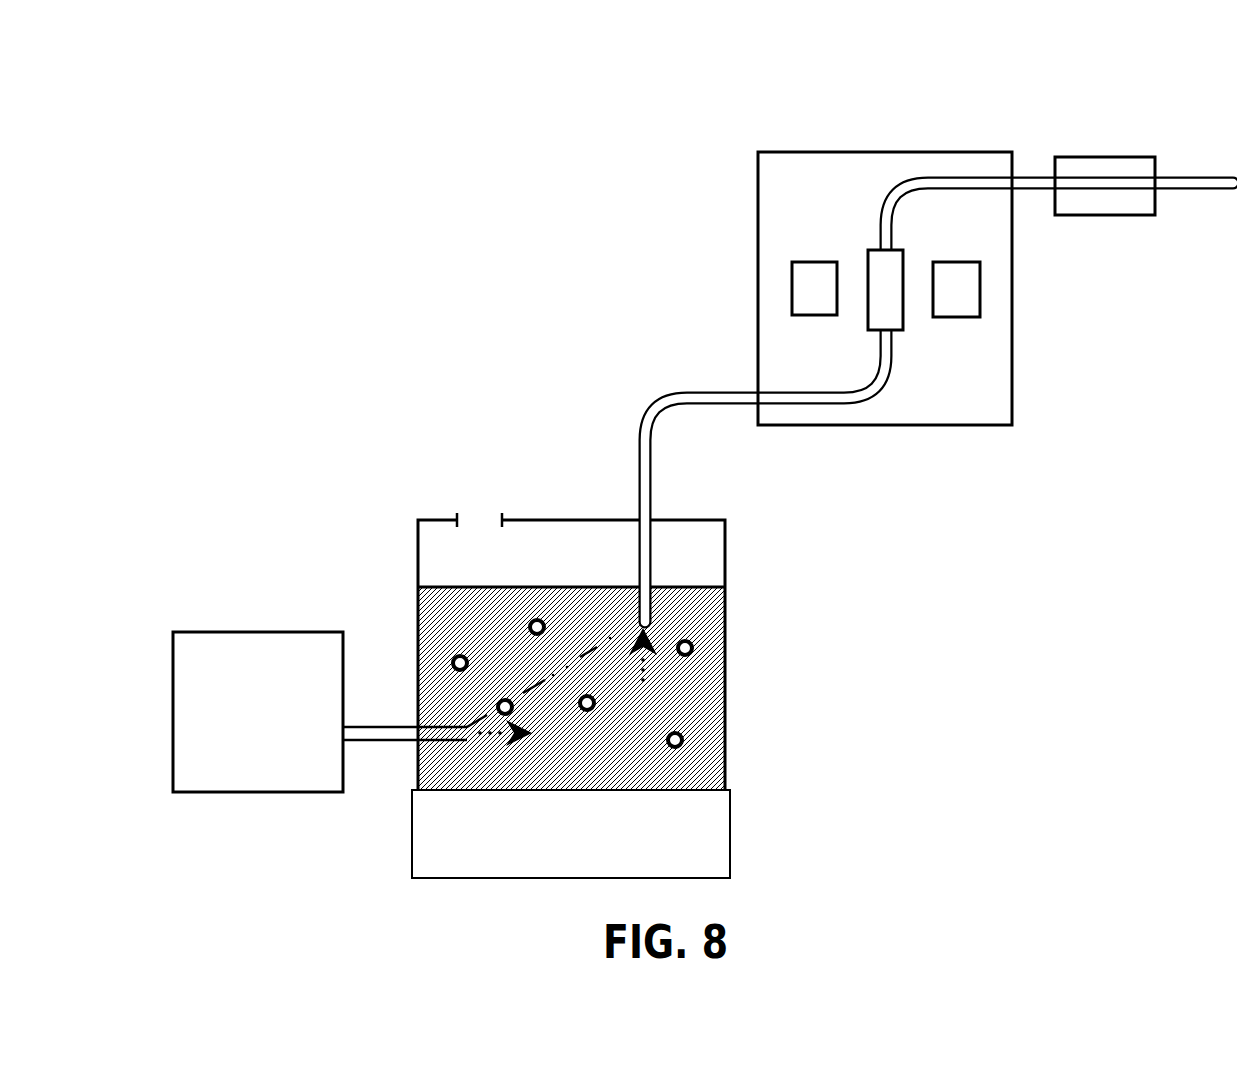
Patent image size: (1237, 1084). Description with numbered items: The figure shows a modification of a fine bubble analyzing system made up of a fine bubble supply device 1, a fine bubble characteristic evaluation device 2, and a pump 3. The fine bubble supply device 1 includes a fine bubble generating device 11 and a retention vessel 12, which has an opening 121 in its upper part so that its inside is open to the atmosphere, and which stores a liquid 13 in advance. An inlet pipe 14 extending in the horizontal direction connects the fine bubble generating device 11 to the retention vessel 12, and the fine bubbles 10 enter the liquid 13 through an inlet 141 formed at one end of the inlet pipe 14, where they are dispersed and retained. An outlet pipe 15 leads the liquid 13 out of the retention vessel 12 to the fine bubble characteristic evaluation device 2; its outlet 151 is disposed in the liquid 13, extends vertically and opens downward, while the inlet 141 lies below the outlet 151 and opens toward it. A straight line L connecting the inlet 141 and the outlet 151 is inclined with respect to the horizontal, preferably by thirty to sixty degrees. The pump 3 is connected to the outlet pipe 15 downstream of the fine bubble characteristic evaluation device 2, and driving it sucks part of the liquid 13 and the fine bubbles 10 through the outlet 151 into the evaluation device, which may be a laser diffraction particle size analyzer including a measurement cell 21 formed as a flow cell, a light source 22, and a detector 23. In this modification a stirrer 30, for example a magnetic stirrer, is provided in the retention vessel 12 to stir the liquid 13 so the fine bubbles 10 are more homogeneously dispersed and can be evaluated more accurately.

The fine bubble supply device 1 is at (403, 362).
The fine bubble characteristic evaluation device 2 is at (872, 118).
The pump 3 is at (1105, 157).
The fine bubbles 10 is at (677, 748).
The fine bubble generating device 11 is at (240, 632).
The retention vessel 12 is at (570, 518).
The opening 121 is at (465, 508).
The liquid 13 is at (587, 778).
The inlet pipe 14 is at (367, 745).
The inlet 141 is at (468, 742).
The outlet pipe 15 is at (656, 487).
The outlet 151 is at (652, 630).
The measurement cell 21 is at (903, 318).
The light source 22 is at (811, 262).
The detector 23 is at (955, 262).
The stirrer 30 is at (732, 828).
The straight line L is at (530, 690).